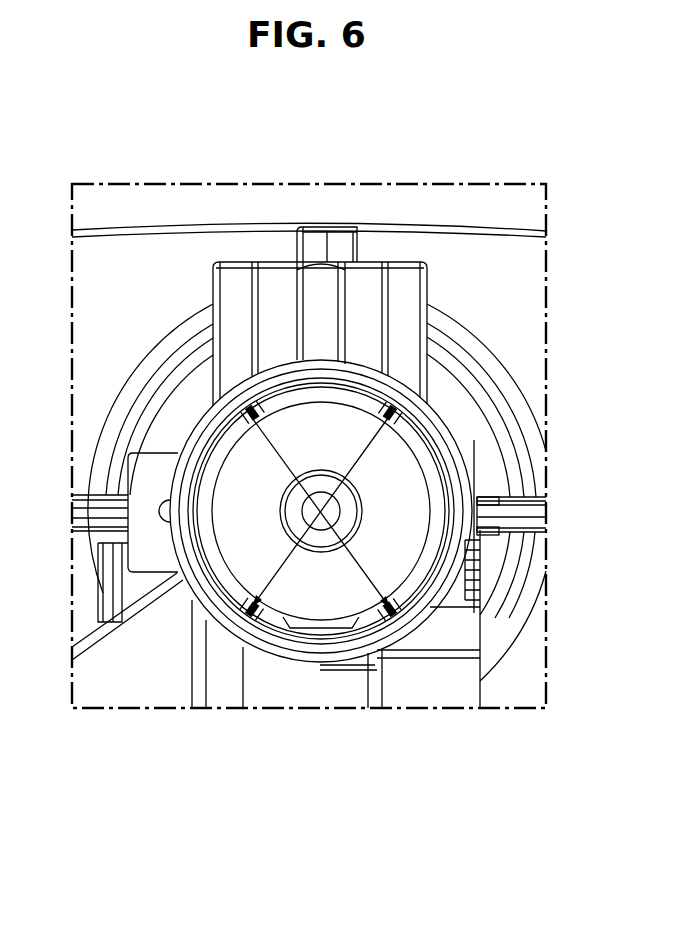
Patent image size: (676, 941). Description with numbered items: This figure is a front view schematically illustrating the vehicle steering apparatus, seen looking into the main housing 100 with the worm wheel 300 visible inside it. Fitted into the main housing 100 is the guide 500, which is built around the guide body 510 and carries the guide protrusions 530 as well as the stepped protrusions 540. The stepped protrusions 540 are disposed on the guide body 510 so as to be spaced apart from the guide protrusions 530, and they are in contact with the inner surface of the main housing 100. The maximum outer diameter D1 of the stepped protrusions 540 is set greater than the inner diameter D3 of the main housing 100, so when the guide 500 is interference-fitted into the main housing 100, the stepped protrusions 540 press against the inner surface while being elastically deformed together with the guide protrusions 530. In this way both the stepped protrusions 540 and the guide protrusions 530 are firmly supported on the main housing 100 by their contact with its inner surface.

The main housing 100 is at (392, 398).
The worm wheel 300 is at (248, 470).
The guide 500 is at (412, 812).
The guide body 510 is at (318, 636).
The guide protrusions 530 is at (430, 557).
The stepped protrusions 540 is at (477, 540).
The maximum outer diameter of the stepped protrusions D1 is at (315, 512).
The inner diameter of the main housing D3 is at (323, 511).